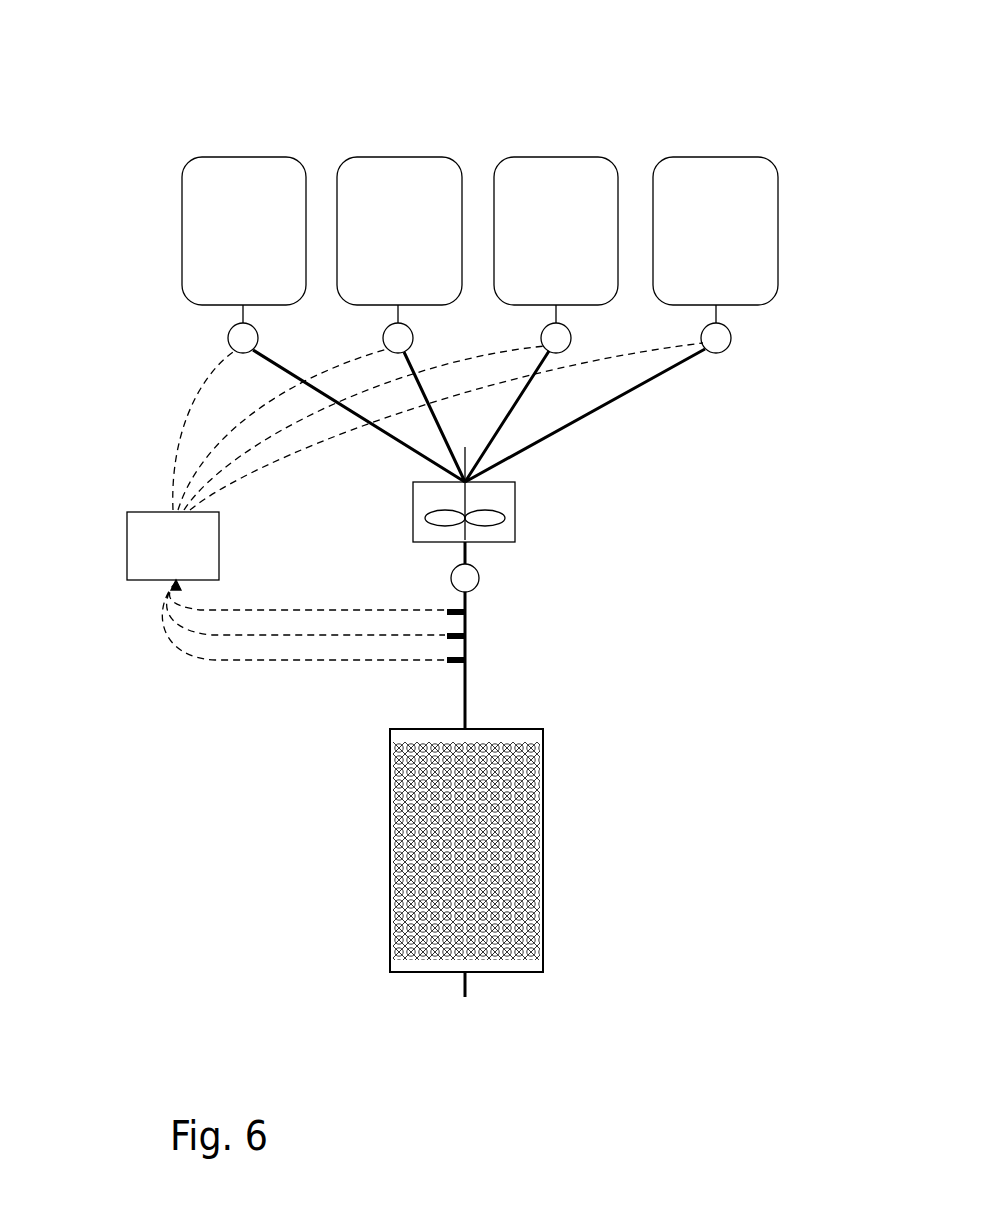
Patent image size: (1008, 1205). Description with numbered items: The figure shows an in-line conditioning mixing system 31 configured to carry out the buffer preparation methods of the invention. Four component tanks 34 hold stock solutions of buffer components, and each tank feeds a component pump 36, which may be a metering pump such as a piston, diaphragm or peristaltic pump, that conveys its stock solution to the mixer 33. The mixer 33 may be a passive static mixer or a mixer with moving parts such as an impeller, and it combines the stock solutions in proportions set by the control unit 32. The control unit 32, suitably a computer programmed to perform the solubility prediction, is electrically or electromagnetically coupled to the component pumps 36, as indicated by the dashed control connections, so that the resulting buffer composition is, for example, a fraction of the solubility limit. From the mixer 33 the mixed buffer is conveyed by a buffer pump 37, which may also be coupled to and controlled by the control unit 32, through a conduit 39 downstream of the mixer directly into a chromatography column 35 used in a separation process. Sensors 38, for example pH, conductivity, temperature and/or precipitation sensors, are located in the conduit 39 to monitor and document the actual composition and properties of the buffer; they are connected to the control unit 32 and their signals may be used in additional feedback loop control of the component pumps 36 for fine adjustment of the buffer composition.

The mixing system 31 is at (714, 577).
The control unit 32 is at (127, 545).
The mixer 33 is at (515, 510).
The component tanks 34 is at (713, 158).
The chromatography column 35 is at (543, 728).
The component pumps 36 is at (384, 336).
The buffer pump 37 is at (480, 578).
The sensors 38 is at (465, 659).
The conduit 39 is at (465, 686).